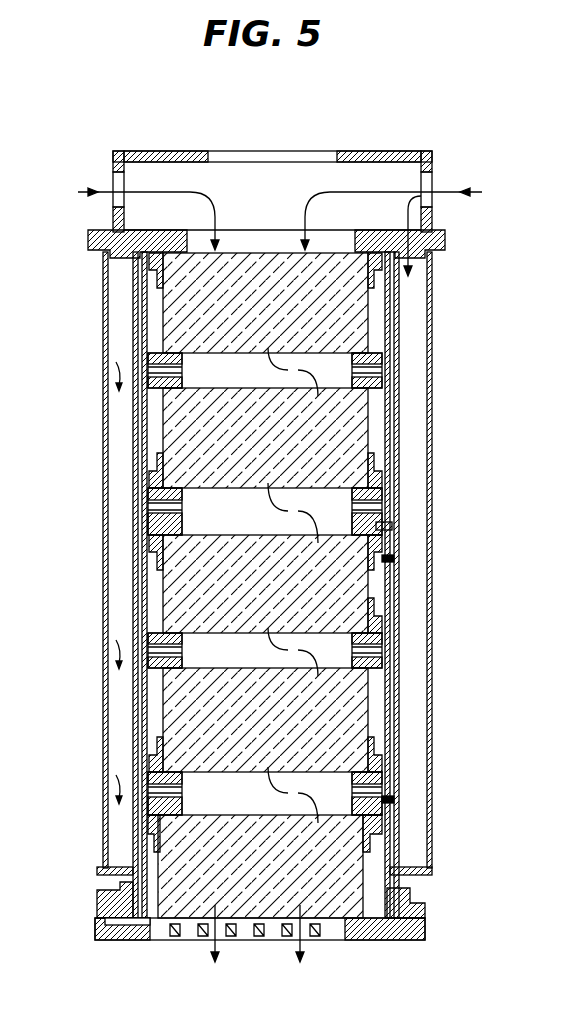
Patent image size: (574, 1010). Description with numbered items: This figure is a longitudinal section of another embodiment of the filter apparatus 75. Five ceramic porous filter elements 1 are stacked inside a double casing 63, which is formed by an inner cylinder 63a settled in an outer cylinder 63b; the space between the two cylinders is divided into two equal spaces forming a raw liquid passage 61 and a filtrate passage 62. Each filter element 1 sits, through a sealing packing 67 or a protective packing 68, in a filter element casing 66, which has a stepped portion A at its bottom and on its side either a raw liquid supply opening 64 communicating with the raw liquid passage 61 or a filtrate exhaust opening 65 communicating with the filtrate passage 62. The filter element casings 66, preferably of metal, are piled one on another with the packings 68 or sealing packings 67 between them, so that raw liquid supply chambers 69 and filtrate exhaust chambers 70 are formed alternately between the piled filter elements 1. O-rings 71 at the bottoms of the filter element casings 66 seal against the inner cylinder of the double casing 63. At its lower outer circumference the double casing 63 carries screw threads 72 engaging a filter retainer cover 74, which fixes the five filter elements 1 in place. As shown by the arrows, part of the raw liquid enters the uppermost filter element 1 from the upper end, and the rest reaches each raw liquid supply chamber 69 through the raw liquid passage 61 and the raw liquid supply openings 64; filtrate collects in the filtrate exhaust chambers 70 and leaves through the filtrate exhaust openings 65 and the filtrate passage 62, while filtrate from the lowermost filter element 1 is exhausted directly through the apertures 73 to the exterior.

The ceramic porous filter element 1 is at (355, 312).
The raw liquid passage 61 is at (393, 504).
The filtrate passage 62 is at (118, 534).
The double casing 63 is at (430, 702).
The inner cylinder 63a is at (400, 735).
The outer cylinder 63b is at (425, 757).
The raw liquid supply opening 64 is at (395, 525).
The filtrate exhaust opening 65 is at (142, 646).
The filter element casing 66 is at (142, 600).
The sealing packing 67 is at (388, 459).
The protective packing 68 is at (392, 624).
The raw liquid supply chamber 69 is at (394, 561).
The filtrate exhaust chamber 70 is at (392, 364).
The O-ring 71 is at (395, 388).
The screw threads 72 is at (412, 892).
The apertures 73 is at (330, 938).
The filter retainer cover 74 is at (426, 912).
The filter apparatus 75 is at (395, 151).
The stepped portion A is at (145, 506).